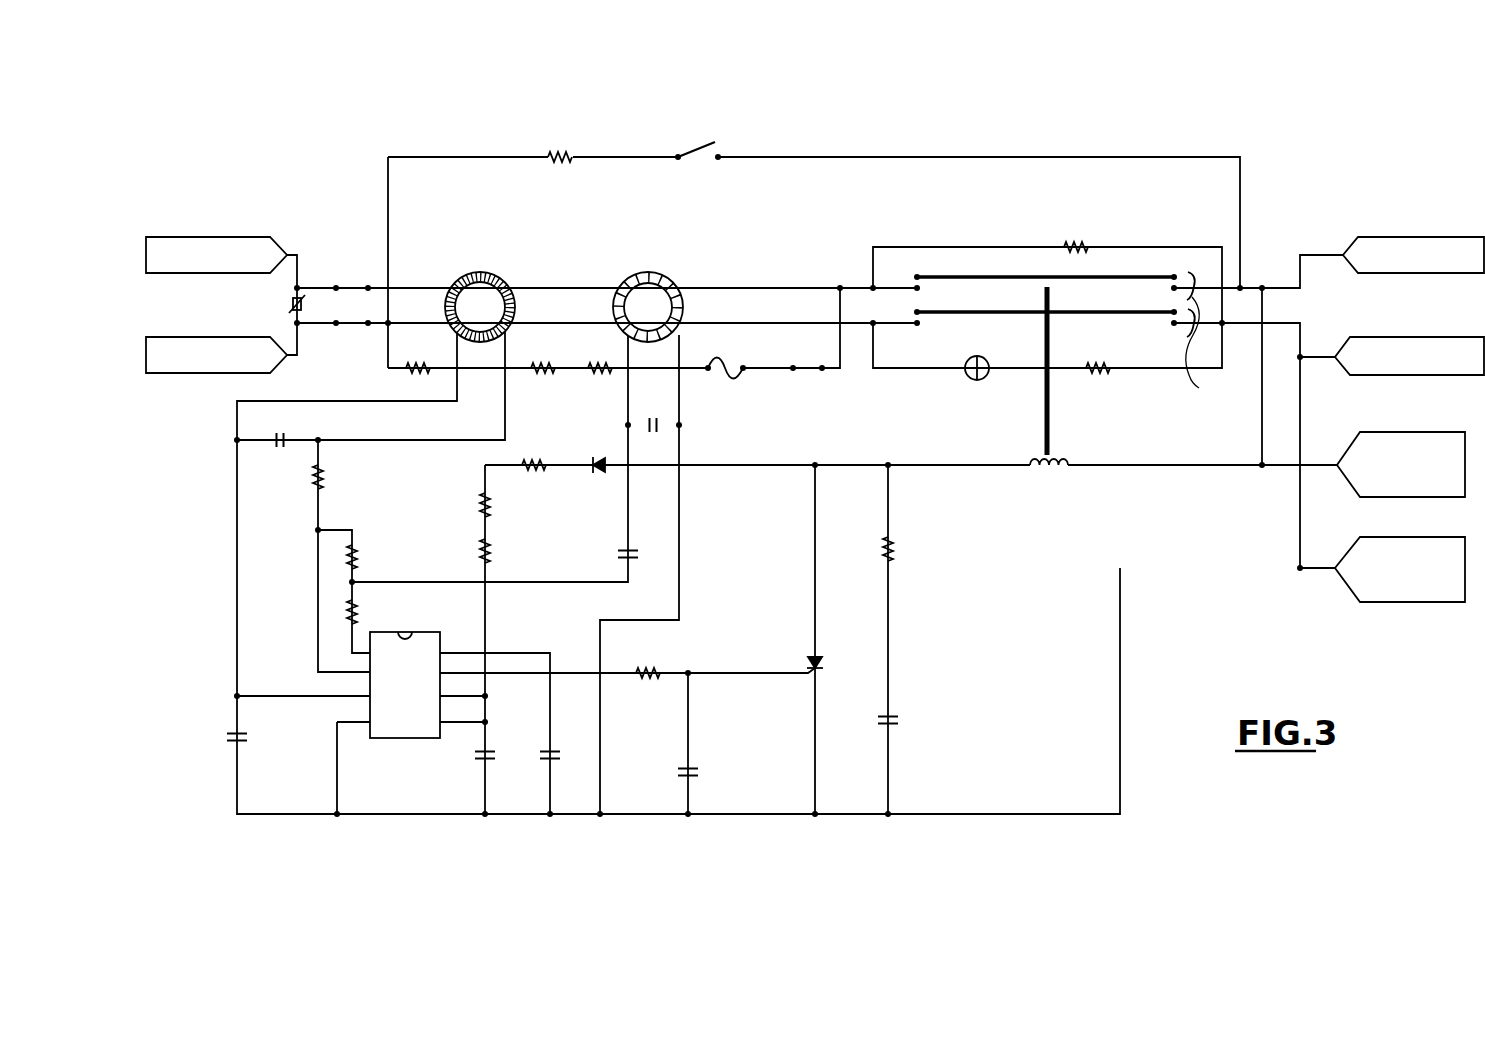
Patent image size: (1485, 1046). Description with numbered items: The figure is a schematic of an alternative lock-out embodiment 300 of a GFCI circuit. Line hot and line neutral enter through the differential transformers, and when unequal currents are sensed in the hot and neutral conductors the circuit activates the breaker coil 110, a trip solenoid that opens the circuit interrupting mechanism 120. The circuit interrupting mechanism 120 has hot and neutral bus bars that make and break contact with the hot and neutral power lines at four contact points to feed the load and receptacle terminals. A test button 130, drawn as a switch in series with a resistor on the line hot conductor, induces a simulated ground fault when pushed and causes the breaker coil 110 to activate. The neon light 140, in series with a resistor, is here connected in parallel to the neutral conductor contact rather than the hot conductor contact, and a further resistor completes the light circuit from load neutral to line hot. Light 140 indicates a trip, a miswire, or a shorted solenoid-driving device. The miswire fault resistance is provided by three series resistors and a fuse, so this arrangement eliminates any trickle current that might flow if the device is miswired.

The breaker coil 110 is at (1065, 460).
The circuit interrupting mechanism 120 is at (1214, 338).
The test button 130 is at (696, 146).
The neon light 140 is at (975, 380).
The alternative lock-out embodiment 300 is at (815, 464).